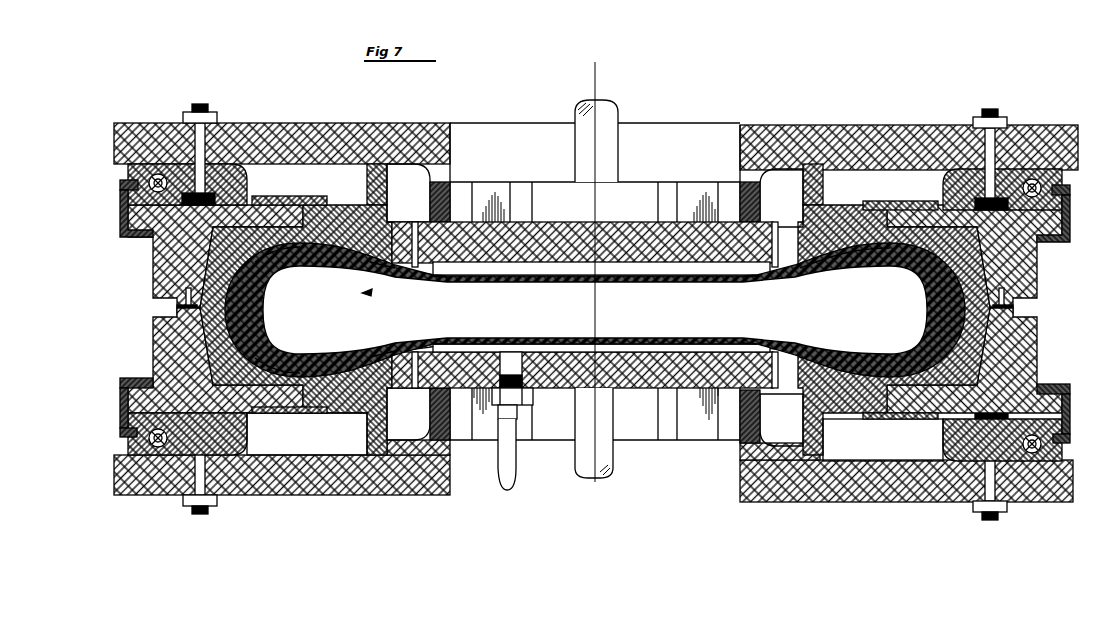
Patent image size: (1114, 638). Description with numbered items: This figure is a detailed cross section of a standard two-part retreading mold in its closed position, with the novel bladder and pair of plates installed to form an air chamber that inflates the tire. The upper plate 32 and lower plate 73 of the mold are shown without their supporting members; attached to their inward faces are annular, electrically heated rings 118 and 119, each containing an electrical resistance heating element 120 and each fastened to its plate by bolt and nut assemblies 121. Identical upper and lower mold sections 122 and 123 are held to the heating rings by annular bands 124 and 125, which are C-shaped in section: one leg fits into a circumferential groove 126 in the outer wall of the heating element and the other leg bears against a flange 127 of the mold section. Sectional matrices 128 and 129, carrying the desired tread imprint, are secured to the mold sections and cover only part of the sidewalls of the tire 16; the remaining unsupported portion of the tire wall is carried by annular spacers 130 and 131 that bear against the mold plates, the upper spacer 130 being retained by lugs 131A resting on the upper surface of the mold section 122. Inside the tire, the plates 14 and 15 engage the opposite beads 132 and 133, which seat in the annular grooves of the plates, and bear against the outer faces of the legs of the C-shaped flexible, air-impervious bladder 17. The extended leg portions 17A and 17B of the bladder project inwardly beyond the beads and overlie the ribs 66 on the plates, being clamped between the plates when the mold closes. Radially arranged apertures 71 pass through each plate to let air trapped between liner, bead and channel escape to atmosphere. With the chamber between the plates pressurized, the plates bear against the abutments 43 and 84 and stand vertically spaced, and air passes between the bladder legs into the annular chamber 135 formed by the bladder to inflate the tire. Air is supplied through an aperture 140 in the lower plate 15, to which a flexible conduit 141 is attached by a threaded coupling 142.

The upper plate 14 is at (488, 261).
The lower plate 15 is at (565, 350).
The tire 16 is at (248, 305).
The bladder 17 is at (823, 355).
The extended leg portion 17A is at (445, 280).
The extended leg portion 17B is at (434, 344).
The upper plate of mold 32 is at (332, 128).
The abutment 43 is at (447, 175).
The ribs 66 is at (757, 277).
The apertures 71 is at (414, 222).
The lower plate of mold 73 is at (372, 496).
The abutment 84 is at (433, 452).
The upper heating ring 118 is at (234, 190).
The lower heating ring 119 is at (230, 430).
The electrical resistance heating element 120 is at (130, 178).
The bolt and nut assemblies 121 is at (210, 122).
The upper mold section 122 is at (151, 272).
The lower mold section 123 is at (154, 342).
The annular band 124 is at (122, 236).
The annular band 125 is at (125, 400).
The circumferential groove 126 is at (130, 441).
The flange 127 is at (148, 380).
The upper matrix 128 is at (276, 262).
The lower matrix 129 is at (273, 352).
The upper annular spacer 130 is at (347, 210).
The lower annular spacer 131 is at (344, 402).
The lugs 131A is at (300, 197).
The bead 132 is at (388, 270).
The bead 133 is at (389, 348).
The annular chamber 135 is at (370, 292).
The aperture 140 is at (511, 352).
The flexible conduit 141 is at (516, 472).
The threaded coupling 142 is at (520, 407).